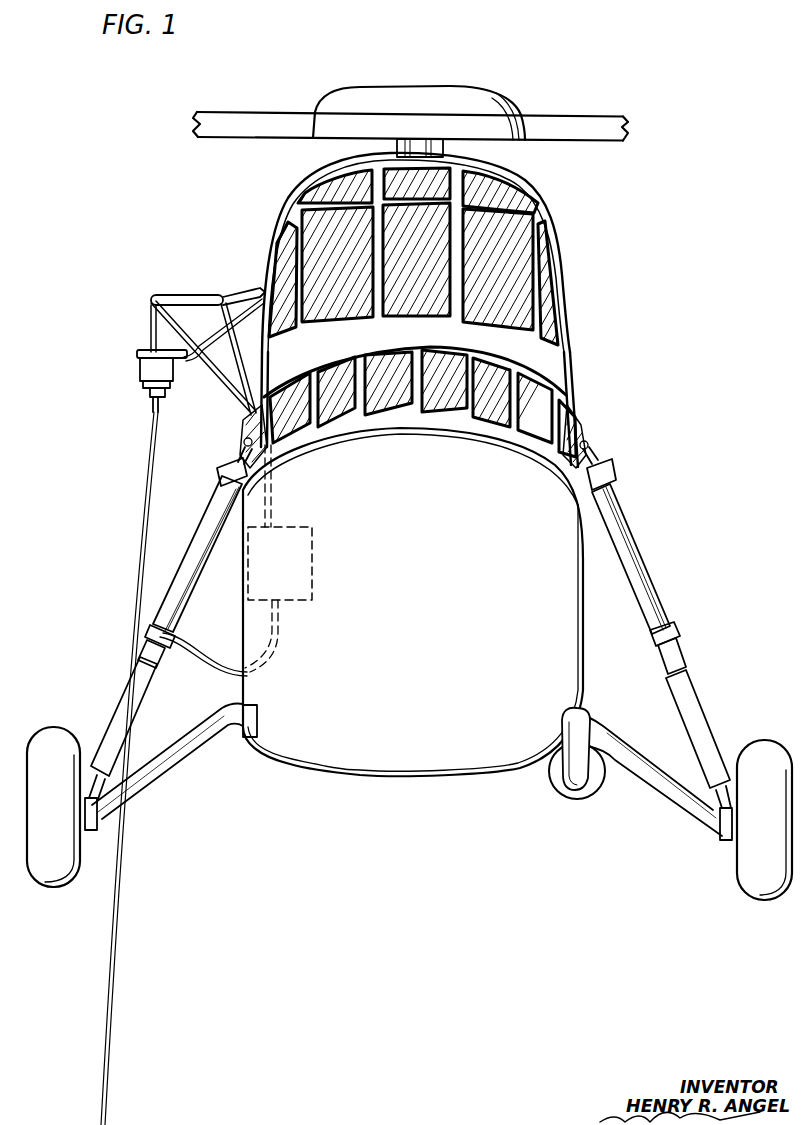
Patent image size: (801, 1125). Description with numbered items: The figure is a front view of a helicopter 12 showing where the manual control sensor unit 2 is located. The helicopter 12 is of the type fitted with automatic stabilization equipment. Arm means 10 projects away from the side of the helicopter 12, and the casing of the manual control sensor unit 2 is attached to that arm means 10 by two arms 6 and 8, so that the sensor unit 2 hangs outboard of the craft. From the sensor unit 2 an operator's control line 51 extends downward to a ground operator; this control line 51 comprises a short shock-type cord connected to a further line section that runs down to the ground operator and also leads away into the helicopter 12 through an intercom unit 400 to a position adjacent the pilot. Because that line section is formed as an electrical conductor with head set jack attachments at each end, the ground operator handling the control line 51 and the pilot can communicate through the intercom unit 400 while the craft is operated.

The manual control sensor unit 2 is at (137, 371).
The arm 6 is at (205, 326).
The arm 8 is at (150, 326).
The arm means 10 is at (182, 297).
The helicopter 12 is at (569, 262).
The operator's control line 51 is at (131, 578).
The intercom unit 400 is at (312, 566).